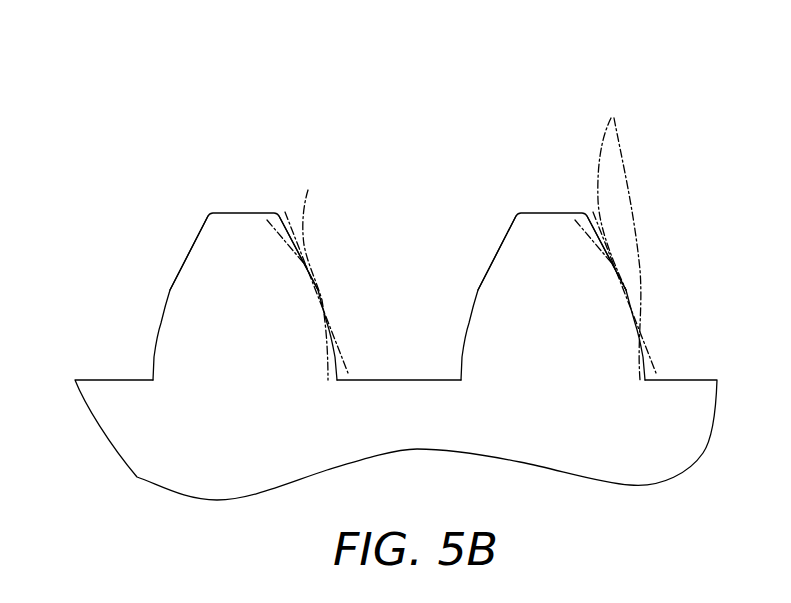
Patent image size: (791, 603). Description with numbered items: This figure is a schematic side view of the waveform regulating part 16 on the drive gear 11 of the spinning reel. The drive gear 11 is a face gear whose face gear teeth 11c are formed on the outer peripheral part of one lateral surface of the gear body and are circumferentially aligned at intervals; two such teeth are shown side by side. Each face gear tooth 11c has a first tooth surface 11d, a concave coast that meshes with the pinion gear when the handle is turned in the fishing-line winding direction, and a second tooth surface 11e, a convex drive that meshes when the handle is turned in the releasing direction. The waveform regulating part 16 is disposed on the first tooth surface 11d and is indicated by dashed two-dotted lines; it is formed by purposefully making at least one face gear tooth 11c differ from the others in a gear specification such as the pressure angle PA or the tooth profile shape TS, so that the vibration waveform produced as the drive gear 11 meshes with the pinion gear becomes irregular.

The drive gear 11 is at (541, 186).
The face gear teeth 11c is at (243, 180).
The first tooth surface 11d is at (320, 276).
The second tooth surface 11e is at (170, 290).
The waveform regulating part 16 is at (345, 307).
The tooth profile shape TS is at (472, 232).
The pressure angle PA is at (306, 198).